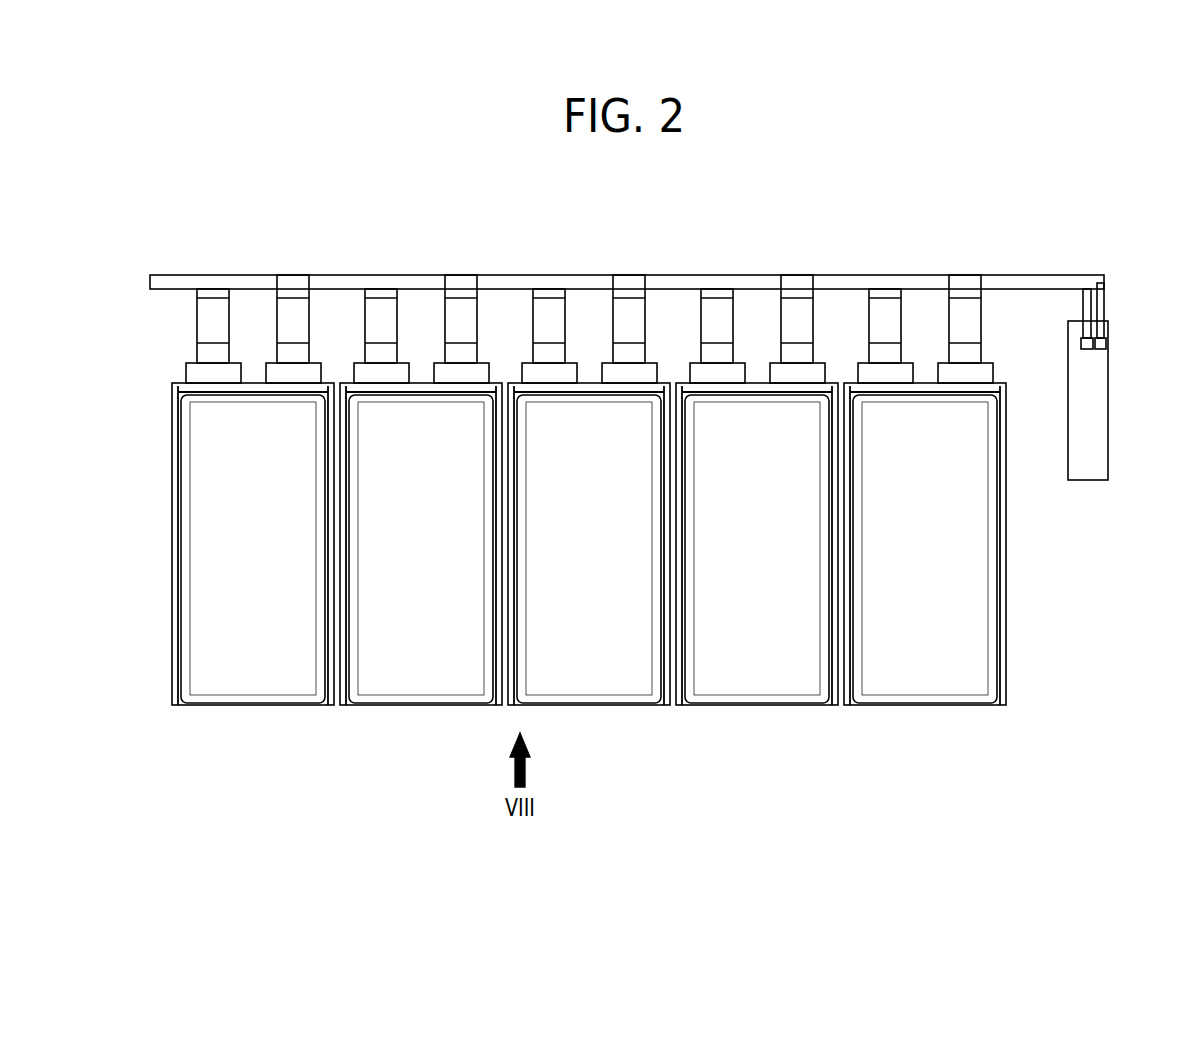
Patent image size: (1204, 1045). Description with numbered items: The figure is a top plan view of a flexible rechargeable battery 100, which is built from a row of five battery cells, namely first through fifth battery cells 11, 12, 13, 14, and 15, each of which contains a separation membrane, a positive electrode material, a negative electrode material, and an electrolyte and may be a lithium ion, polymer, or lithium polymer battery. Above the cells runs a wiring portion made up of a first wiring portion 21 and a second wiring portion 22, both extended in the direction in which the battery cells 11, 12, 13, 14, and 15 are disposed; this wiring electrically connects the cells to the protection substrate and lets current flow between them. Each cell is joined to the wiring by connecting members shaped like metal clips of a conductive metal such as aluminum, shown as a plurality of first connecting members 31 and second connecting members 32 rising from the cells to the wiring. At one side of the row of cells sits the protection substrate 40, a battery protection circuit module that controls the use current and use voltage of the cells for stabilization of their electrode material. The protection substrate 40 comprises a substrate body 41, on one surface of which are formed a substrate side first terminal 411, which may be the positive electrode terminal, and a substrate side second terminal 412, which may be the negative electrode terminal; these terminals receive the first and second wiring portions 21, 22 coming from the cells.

The flexible rechargeable battery 100 is at (1002, 206).
The first battery cell 11 is at (925, 477).
The second battery cell 12 is at (758, 670).
The third battery cell 13 is at (588, 670).
The fourth battery cell 14 is at (422, 670).
The fifth battery cell 15 is at (254, 670).
The first wiring portion 21 is at (1036, 283).
The second wiring portion 22 is at (1073, 283).
The first connecting member 31 is at (962, 258).
The second connecting member 32 is at (884, 258).
The protection substrate 40 is at (1106, 384).
The substrate body 41 is at (1098, 395).
The substrate side first terminal 411 is at (1113, 345).
The substrate side second terminal 412 is at (1081, 343).